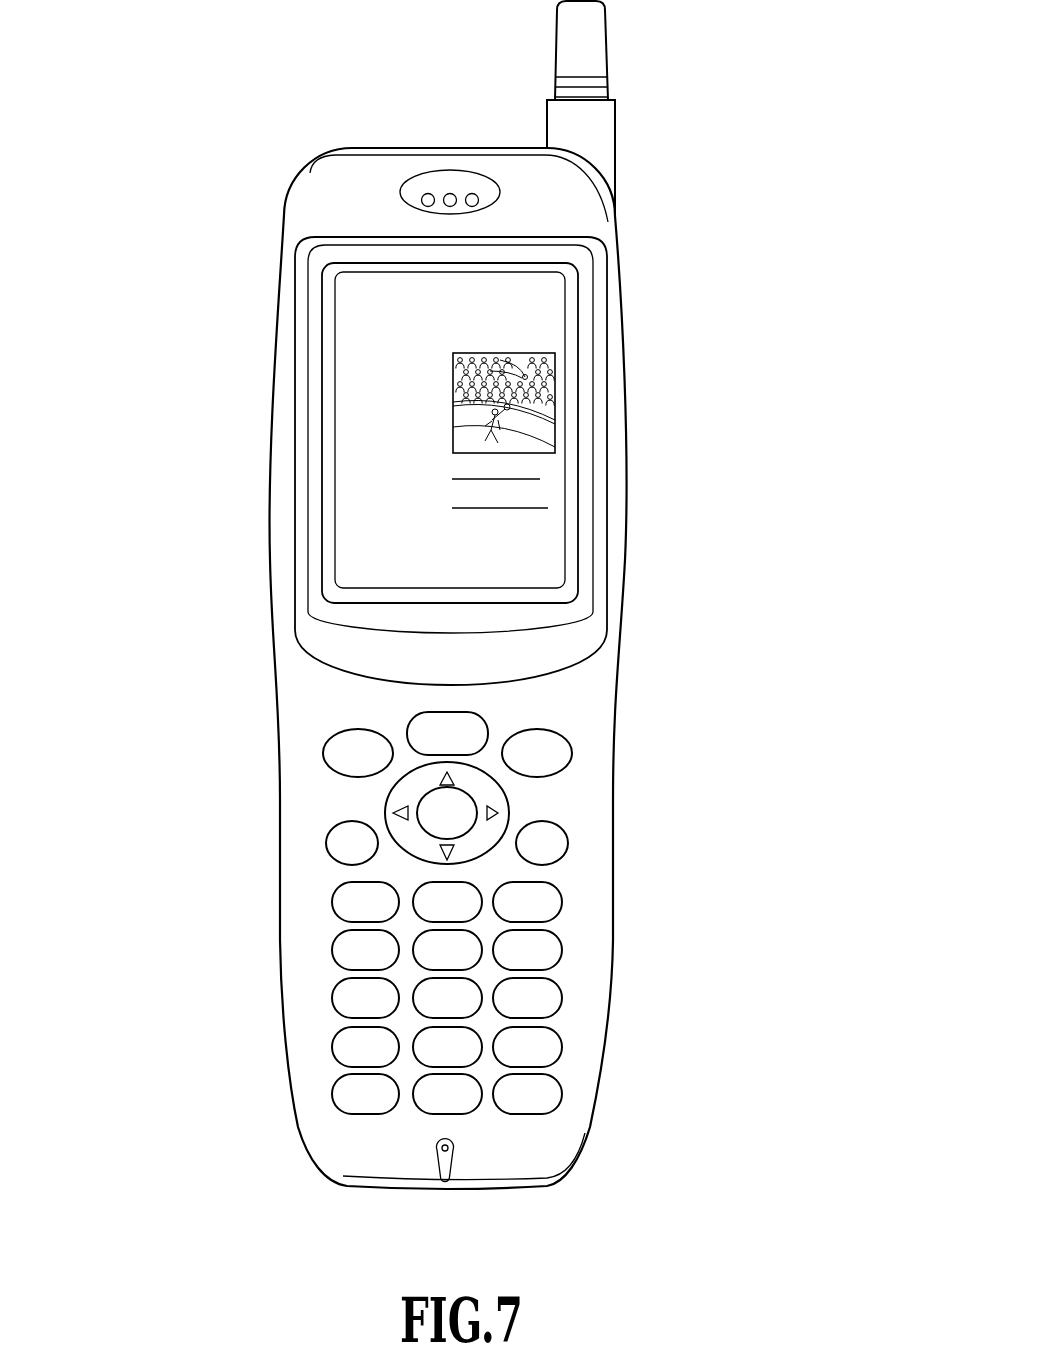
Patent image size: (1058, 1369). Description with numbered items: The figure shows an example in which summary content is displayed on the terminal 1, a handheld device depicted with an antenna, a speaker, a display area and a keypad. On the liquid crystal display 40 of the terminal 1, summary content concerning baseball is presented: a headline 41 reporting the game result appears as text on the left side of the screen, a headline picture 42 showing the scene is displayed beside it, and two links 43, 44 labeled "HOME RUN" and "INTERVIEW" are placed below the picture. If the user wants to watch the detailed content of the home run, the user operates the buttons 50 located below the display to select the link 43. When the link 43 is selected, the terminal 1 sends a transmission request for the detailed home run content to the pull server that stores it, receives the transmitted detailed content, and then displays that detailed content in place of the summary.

The terminal 1 is at (385, 147).
The liquid crystal display 40 is at (564, 310).
The headline 41 is at (342, 398).
The headline picture 42 is at (553, 372).
The link 43 is at (541, 470).
The link 44 is at (549, 500).
The buttons 50 is at (540, 802).